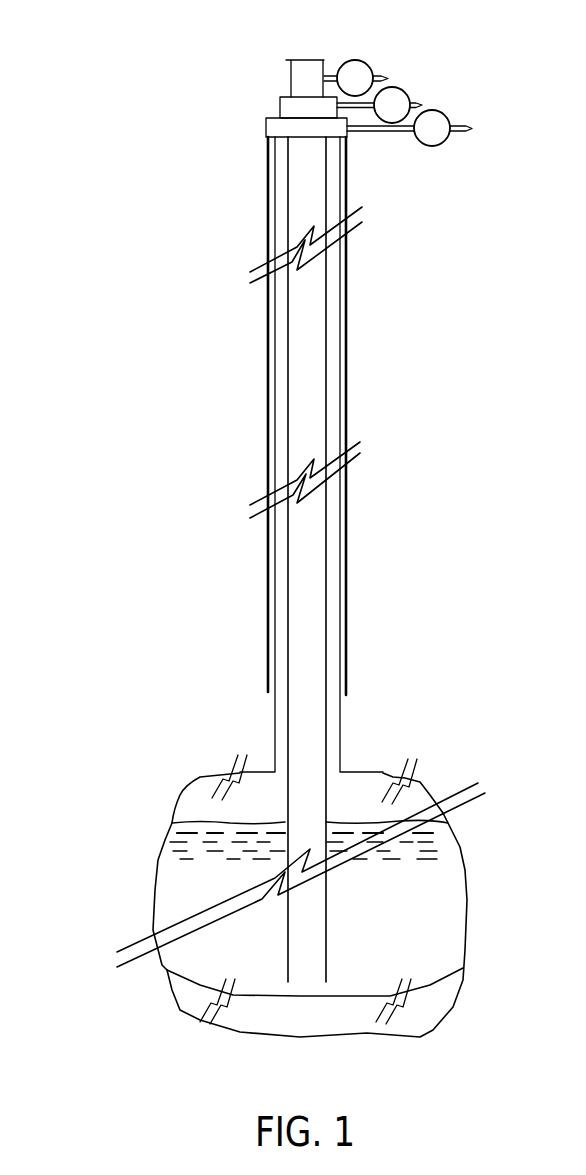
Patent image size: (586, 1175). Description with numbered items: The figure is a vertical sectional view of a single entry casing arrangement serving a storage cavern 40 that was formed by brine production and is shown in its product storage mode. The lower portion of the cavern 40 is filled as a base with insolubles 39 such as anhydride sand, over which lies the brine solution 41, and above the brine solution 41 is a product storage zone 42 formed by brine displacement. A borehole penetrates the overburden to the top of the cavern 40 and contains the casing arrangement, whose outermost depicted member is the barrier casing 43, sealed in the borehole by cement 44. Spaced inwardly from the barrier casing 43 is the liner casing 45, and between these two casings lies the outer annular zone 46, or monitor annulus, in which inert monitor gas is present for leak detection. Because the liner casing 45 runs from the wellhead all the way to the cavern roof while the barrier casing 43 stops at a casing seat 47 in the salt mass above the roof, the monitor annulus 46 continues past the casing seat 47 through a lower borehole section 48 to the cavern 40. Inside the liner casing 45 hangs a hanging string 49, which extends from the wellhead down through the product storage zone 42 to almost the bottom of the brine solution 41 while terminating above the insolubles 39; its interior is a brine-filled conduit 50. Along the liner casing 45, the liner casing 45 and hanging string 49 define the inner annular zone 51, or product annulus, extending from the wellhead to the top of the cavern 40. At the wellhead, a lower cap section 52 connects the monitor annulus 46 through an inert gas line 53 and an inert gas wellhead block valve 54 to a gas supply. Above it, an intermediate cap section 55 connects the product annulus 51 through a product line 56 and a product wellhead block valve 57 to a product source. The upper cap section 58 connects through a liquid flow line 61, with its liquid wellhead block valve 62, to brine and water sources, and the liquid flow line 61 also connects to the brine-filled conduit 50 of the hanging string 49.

The insolubles 39 is at (438, 1003).
The storage cavern 40 is at (155, 890).
The brine solution 41 is at (432, 927).
The product storage zone 42 is at (417, 792).
The barrier casing 43 is at (268, 365).
The cement 44 is at (267, 563).
The liner casing 45 is at (342, 508).
The outer annular zone 46 is at (272, 328).
The casing seat 47 is at (268, 692).
The lower borehole section 48 is at (340, 720).
The hanging string 49 is at (328, 305).
The brine-filled conduit 50 is at (312, 287).
The inner annular zone 51 is at (332, 345).
The lower cap section 52 is at (283, 128).
The inert gas line 53 is at (362, 133).
The inert gas wellhead block valve 54 is at (443, 110).
The intermediate cap section 55 is at (297, 107).
The product line 56 is at (367, 110).
The product wellhead block valve 57 is at (398, 83).
The upper cap section 58 is at (310, 77).
The liquid flow line 61 is at (330, 72).
The liquid wellhead block valve 62 is at (357, 60).